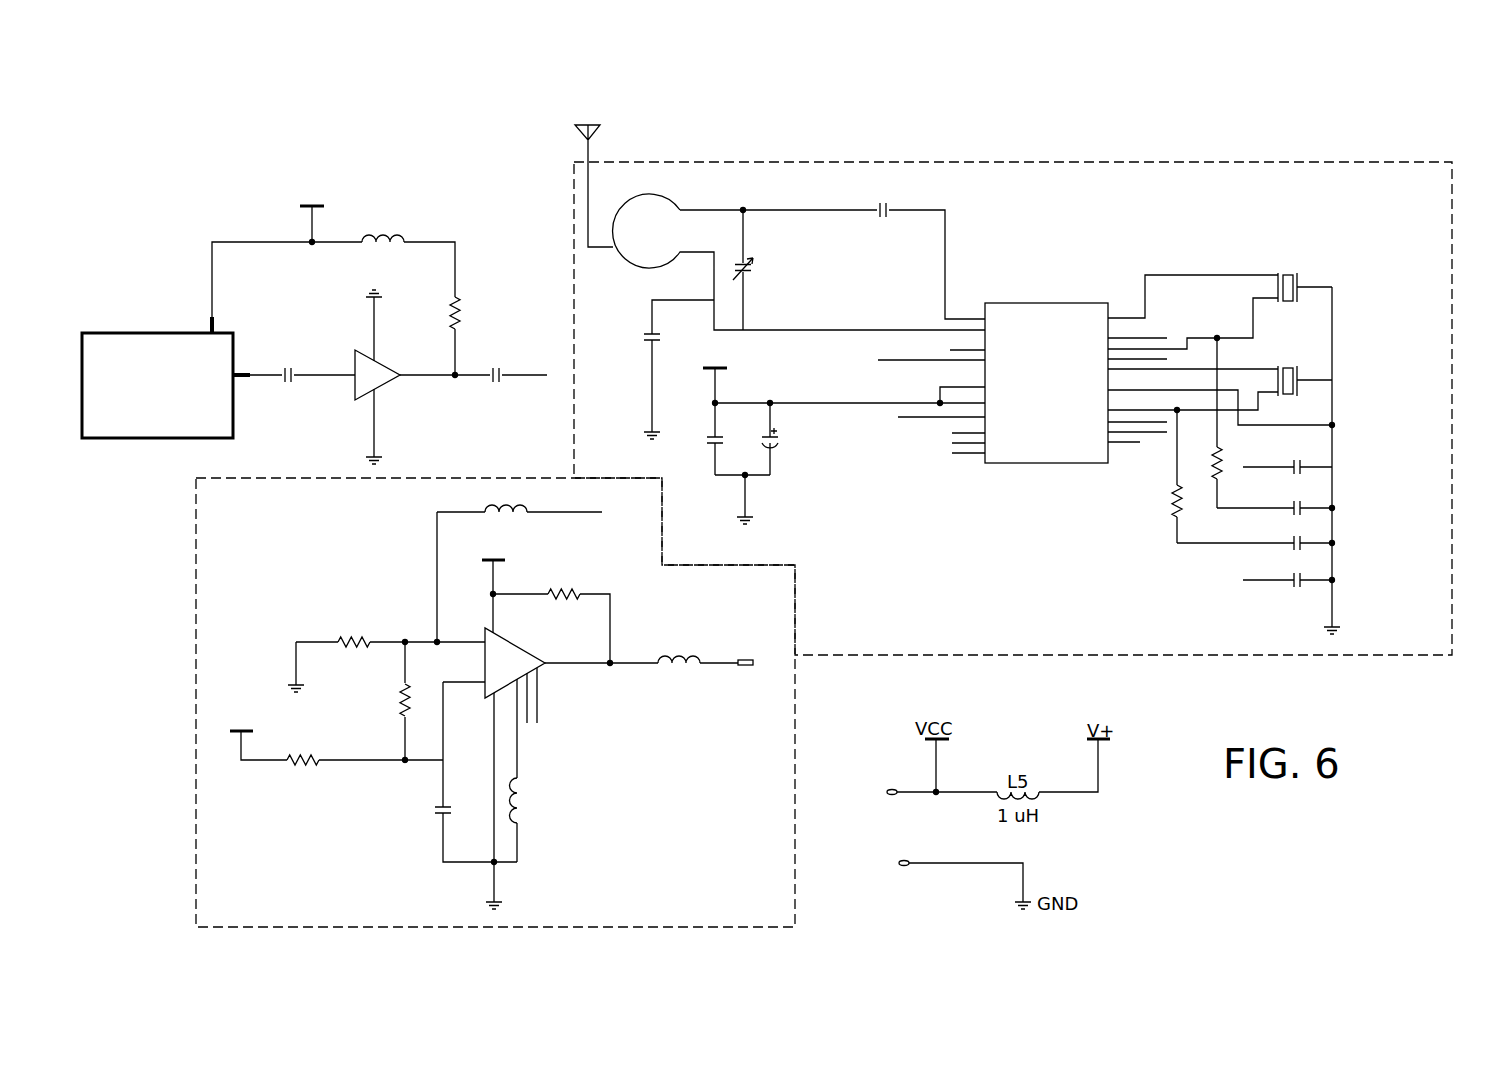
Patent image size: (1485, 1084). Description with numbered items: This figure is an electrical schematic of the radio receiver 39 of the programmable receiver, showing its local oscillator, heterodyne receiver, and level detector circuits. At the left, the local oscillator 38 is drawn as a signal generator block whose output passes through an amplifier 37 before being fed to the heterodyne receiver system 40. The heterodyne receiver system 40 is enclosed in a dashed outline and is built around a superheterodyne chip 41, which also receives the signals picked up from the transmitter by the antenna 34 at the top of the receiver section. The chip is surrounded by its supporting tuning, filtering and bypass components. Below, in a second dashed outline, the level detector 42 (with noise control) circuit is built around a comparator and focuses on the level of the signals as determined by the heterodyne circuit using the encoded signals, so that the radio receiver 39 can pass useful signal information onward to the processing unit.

The antenna 34 is at (586, 152).
The amplifier 37 is at (392, 381).
The local oscillator 38 is at (119, 332).
The radio receiver 39 is at (203, 147).
The heterodyne receiver system 40 is at (1355, 162).
The superheterodyne chip 41 is at (1070, 303).
The level detector circuit 42 is at (195, 525).